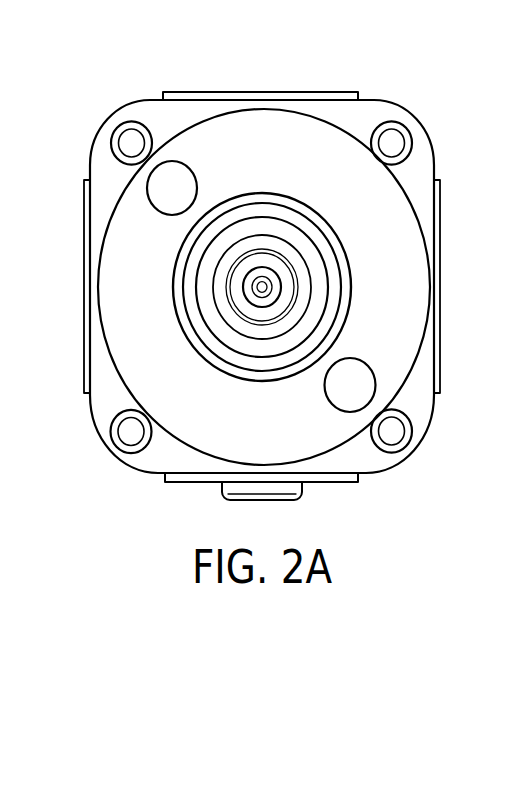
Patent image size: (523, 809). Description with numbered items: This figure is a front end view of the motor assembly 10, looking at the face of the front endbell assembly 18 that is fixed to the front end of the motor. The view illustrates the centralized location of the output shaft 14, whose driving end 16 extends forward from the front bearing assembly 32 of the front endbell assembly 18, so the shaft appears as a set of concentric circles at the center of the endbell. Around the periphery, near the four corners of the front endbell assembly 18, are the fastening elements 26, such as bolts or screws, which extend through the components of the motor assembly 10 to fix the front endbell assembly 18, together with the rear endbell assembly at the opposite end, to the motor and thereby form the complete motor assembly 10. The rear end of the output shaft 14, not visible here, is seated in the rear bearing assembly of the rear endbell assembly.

The motor assembly 10 is at (211, 78).
The output shaft 14 is at (202, 287).
The driving end 16 is at (262, 287).
The front endbell assembly 18 is at (84, 208).
The fastening elements 26 is at (131, 432).
The front bearing assembly 32 is at (281, 320).